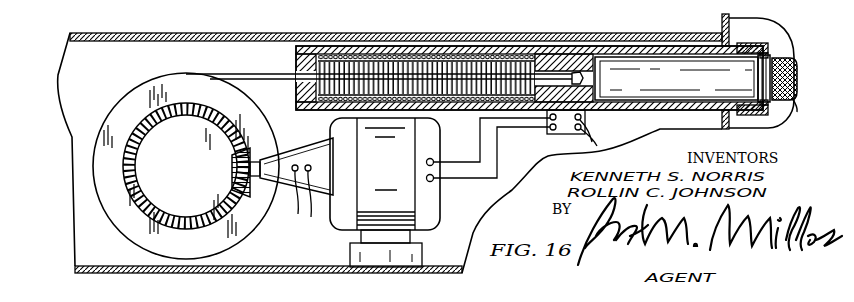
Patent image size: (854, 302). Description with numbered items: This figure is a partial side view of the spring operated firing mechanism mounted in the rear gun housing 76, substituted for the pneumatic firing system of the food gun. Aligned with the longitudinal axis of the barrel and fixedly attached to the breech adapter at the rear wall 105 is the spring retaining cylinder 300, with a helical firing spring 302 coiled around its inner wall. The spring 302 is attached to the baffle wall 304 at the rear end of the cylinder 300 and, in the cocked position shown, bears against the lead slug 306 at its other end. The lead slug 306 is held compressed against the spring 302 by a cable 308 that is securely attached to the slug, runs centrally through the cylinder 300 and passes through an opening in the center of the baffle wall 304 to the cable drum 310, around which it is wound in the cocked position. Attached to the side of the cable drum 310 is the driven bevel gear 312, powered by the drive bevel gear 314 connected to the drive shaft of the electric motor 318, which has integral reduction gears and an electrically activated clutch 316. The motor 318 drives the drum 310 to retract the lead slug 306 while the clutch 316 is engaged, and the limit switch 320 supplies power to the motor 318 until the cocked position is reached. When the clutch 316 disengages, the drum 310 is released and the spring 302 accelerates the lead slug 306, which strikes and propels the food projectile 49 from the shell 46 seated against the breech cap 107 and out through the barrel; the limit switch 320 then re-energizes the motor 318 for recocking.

The rear gun housing 76 is at (298, 33).
The baffle wall 304 is at (308, 53).
The helical firing spring 302 is at (403, 53).
The spring retaining cylinder 300 is at (462, 50).
The cable 308 is at (494, 79).
The lead slug 306 is at (577, 57).
The rear wall 105 is at (730, 17).
The breech cap 107 is at (738, 43).
The shell 46 is at (776, 54).
The food projectile 49 is at (794, 100).
The cable drum 310 is at (140, 98).
The driven bevel gear 312 is at (134, 203).
The drive bevel gear 314 is at (262, 145).
The electrically activated clutch 316 is at (322, 187).
The electric motor 318 is at (432, 207).
The limit switch 320 is at (560, 134).